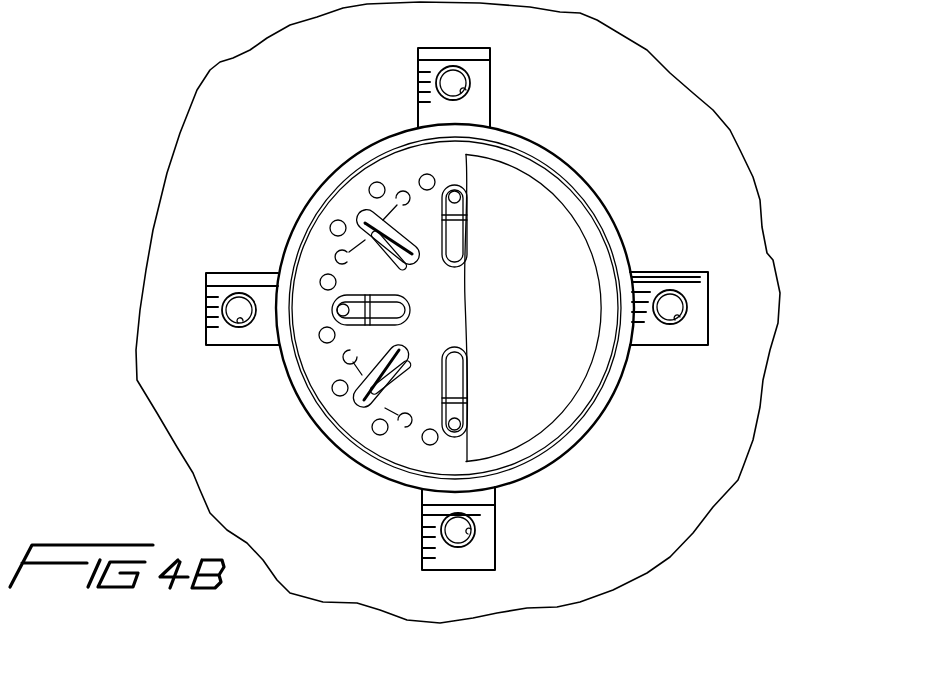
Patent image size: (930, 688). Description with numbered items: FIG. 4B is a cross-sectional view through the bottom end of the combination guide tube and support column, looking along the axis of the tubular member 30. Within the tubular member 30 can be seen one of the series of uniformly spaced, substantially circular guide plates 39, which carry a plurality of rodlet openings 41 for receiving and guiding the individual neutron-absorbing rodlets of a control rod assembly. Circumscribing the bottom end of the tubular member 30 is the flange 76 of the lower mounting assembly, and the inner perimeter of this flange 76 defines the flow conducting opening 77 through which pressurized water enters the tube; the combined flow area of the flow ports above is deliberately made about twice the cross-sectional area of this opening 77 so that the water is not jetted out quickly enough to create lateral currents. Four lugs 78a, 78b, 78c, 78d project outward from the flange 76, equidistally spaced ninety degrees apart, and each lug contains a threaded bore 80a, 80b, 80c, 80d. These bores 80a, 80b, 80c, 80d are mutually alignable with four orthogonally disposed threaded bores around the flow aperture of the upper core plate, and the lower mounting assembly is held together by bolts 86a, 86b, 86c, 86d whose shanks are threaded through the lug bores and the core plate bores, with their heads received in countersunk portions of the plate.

The tubular member 30 is at (573, 433).
The guide plates 39 is at (383, 170).
The rodlet openings 41 is at (393, 315).
The flange 76 is at (567, 172).
The flow conducting opening 77 is at (537, 252).
The lug 78a is at (222, 285).
The lug 78b is at (480, 553).
The lug 78c is at (697, 292).
The lug 78d is at (485, 55).
The threaded bore 80a is at (243, 322).
The threaded bore 80b is at (470, 533).
The threaded bore 80c is at (673, 320).
The threaded bore 80d is at (470, 92).
The bolt 86a is at (240, 305).
The bolt 86b is at (455, 530).
The bolt 86c is at (670, 303).
The bolt 86d is at (447, 80).